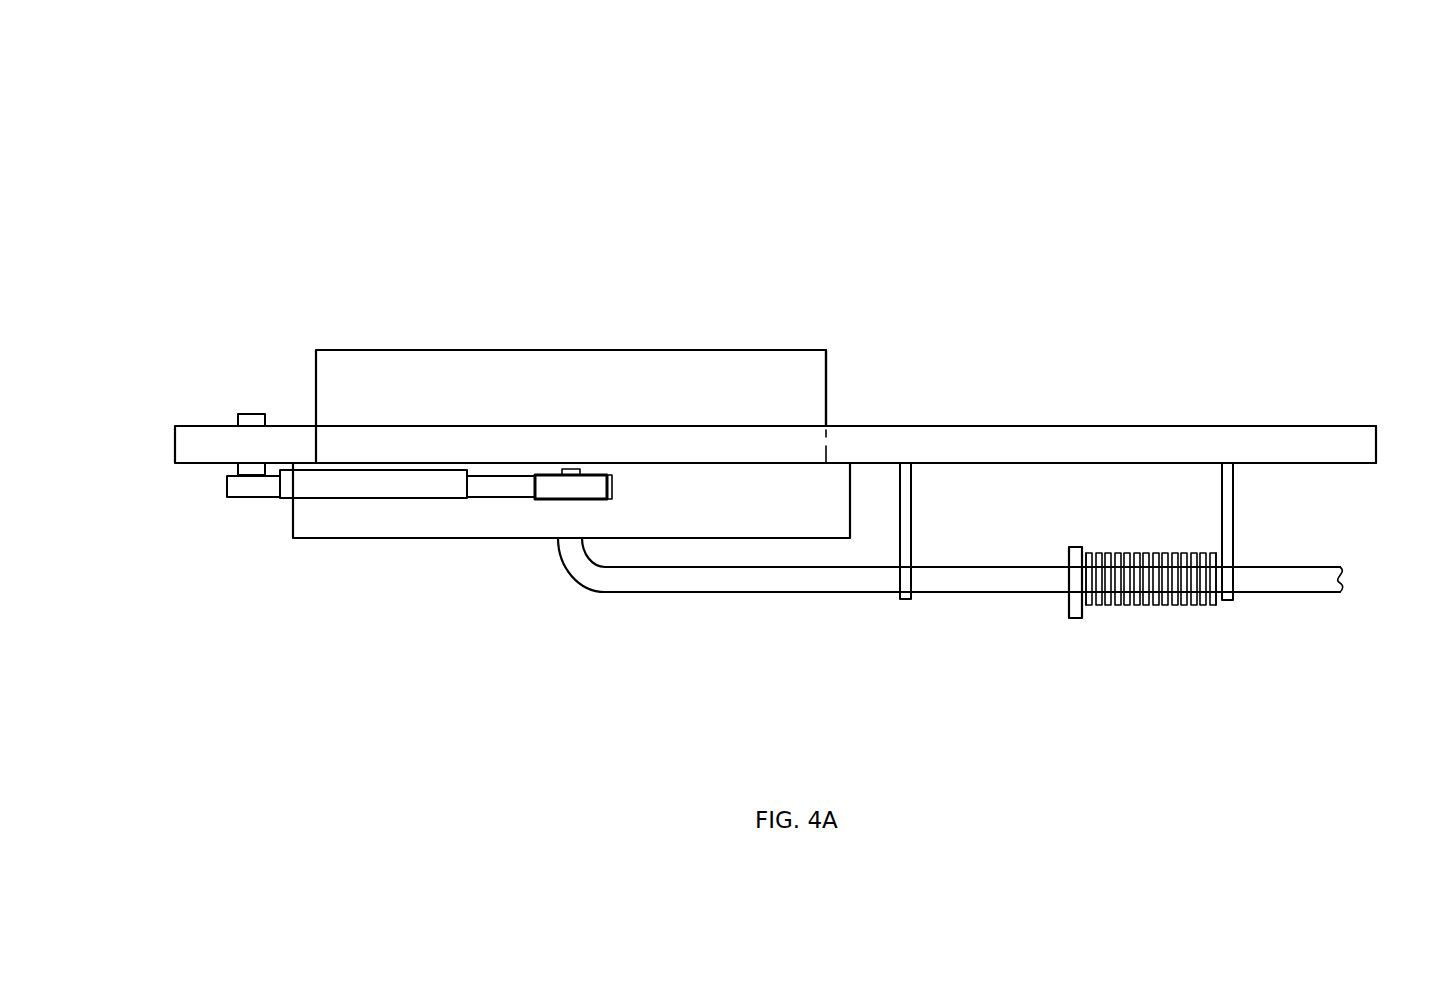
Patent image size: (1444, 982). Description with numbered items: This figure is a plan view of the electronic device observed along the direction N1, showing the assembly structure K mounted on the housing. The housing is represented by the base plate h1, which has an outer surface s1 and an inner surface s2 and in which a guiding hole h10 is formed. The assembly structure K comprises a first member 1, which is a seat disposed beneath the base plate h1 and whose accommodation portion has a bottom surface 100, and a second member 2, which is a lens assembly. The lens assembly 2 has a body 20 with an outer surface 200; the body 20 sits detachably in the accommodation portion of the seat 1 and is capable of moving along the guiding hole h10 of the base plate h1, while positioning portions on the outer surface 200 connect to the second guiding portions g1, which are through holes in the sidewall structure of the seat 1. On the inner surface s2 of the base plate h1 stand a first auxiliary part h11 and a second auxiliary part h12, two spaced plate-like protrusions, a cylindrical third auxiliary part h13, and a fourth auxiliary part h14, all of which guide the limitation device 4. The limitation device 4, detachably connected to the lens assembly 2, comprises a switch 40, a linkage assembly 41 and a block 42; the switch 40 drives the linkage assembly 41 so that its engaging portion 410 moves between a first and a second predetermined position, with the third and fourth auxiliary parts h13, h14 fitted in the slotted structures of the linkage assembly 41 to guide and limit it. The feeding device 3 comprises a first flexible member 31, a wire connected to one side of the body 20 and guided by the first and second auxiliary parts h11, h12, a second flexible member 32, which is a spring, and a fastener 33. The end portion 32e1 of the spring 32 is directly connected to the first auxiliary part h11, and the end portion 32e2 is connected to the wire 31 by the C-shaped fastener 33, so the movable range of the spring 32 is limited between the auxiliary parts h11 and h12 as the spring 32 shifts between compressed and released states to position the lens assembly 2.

The observation direction N1 is at (226, 118).
The assembly structure K is at (212, 745).
The base plate h1 is at (1374, 452).
The outer surface s1 is at (1243, 427).
The inner surface s2 is at (1262, 463).
The first member 1 is at (630, 507).
The bottom surface 100 is at (705, 518).
The second member 2 is at (619, 352).
The outer surface 200 is at (740, 368).
The body 20 is at (828, 378).
The guiding hole h10 is at (317, 443).
The fourth auxiliary part h14 is at (258, 475).
The limitation device 4 is at (345, 541).
The switch 40 is at (250, 418).
The linkage assembly 41 is at (271, 490).
The block 42 is at (350, 485).
The engaging portion 410 is at (585, 495).
The third auxiliary part h13 is at (570, 478).
The second guiding portion g1 is at (610, 499).
The second auxiliary part h12 is at (900, 575).
The first auxiliary part h11 is at (1228, 577).
The feeding device 3 is at (950, 560).
The first flexible member 31 is at (1020, 580).
The second flexible member 32 is at (1142, 534).
The end portion 32e1 is at (1215, 553).
The end portion 32e2 is at (1097, 553).
The fastener 33 is at (1075, 614).